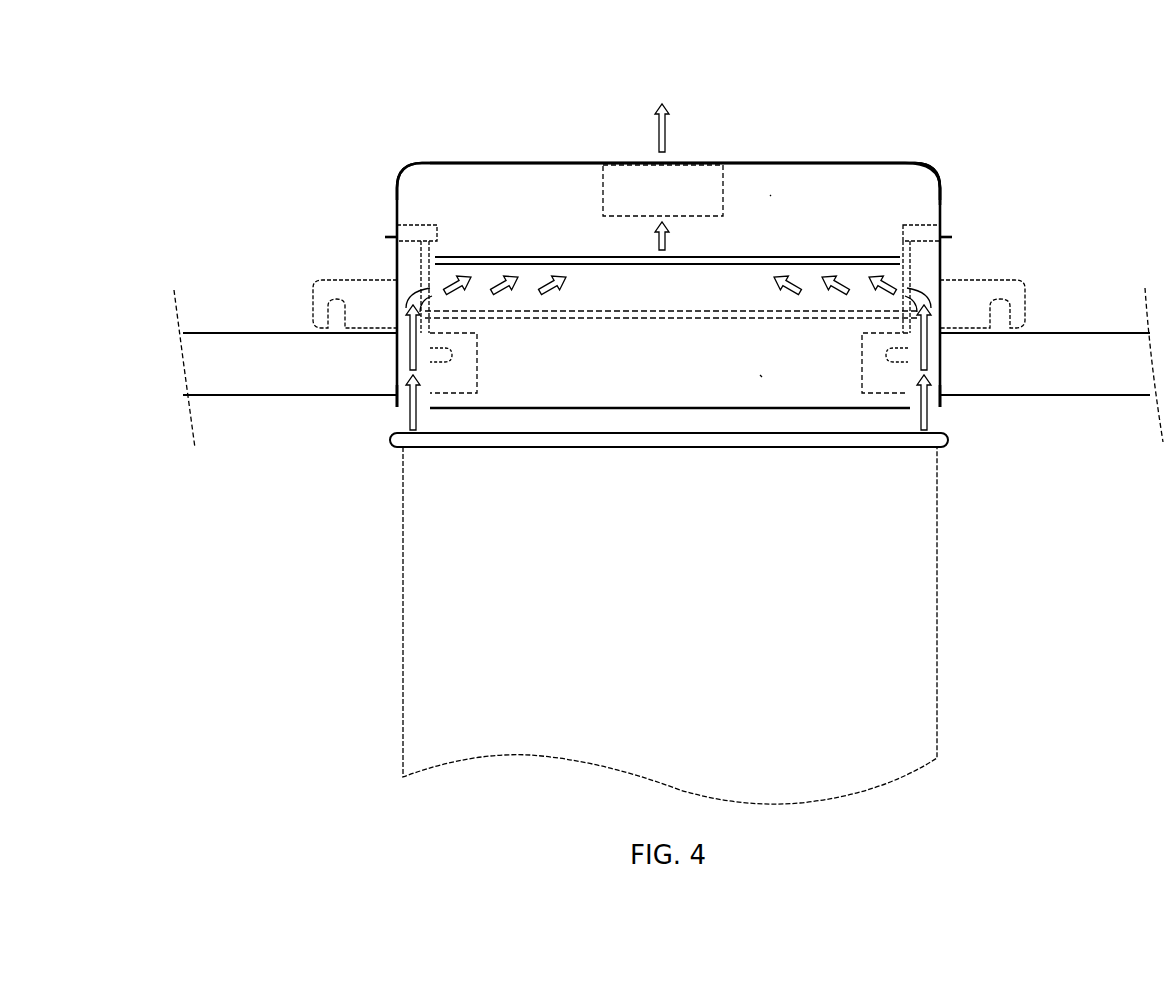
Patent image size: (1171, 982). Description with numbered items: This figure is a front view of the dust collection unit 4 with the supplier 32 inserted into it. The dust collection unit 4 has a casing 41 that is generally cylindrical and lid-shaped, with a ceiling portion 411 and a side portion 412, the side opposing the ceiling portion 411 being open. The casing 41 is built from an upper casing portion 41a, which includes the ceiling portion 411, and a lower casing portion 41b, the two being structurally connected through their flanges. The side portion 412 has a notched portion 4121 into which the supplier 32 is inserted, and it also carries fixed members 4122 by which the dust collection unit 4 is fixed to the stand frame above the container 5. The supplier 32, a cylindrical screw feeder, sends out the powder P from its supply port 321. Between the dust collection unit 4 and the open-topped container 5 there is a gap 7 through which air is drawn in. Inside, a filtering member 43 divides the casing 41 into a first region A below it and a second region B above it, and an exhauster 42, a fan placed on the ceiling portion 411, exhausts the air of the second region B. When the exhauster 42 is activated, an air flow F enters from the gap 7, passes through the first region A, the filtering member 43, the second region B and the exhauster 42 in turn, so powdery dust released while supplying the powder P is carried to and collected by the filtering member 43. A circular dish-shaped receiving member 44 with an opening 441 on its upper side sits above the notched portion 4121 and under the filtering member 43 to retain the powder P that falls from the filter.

The dust collection unit 4 is at (1053, 128).
The casing 41 is at (945, 212).
The ceiling portion 411 is at (493, 162).
The upper casing portion 41a is at (940, 168).
The lower casing portion 41b is at (942, 255).
The side portion 412 is at (940, 270).
The notched portion 4121 is at (393, 405).
The fixed member 4122 is at (345, 285).
The exhauster 42 is at (627, 185).
The filtering member 43 is at (725, 268).
The receiving member 44 is at (680, 292).
The opening 441 is at (597, 287).
The supplier 32 is at (248, 352).
The supply port 321 is at (479, 357).
The gap 7 is at (575, 420).
The container 5 is at (908, 642).
The first region A is at (760, 375).
The second region B is at (770, 195).
The powder P is at (631, 320).
The air flow F is at (667, 133).